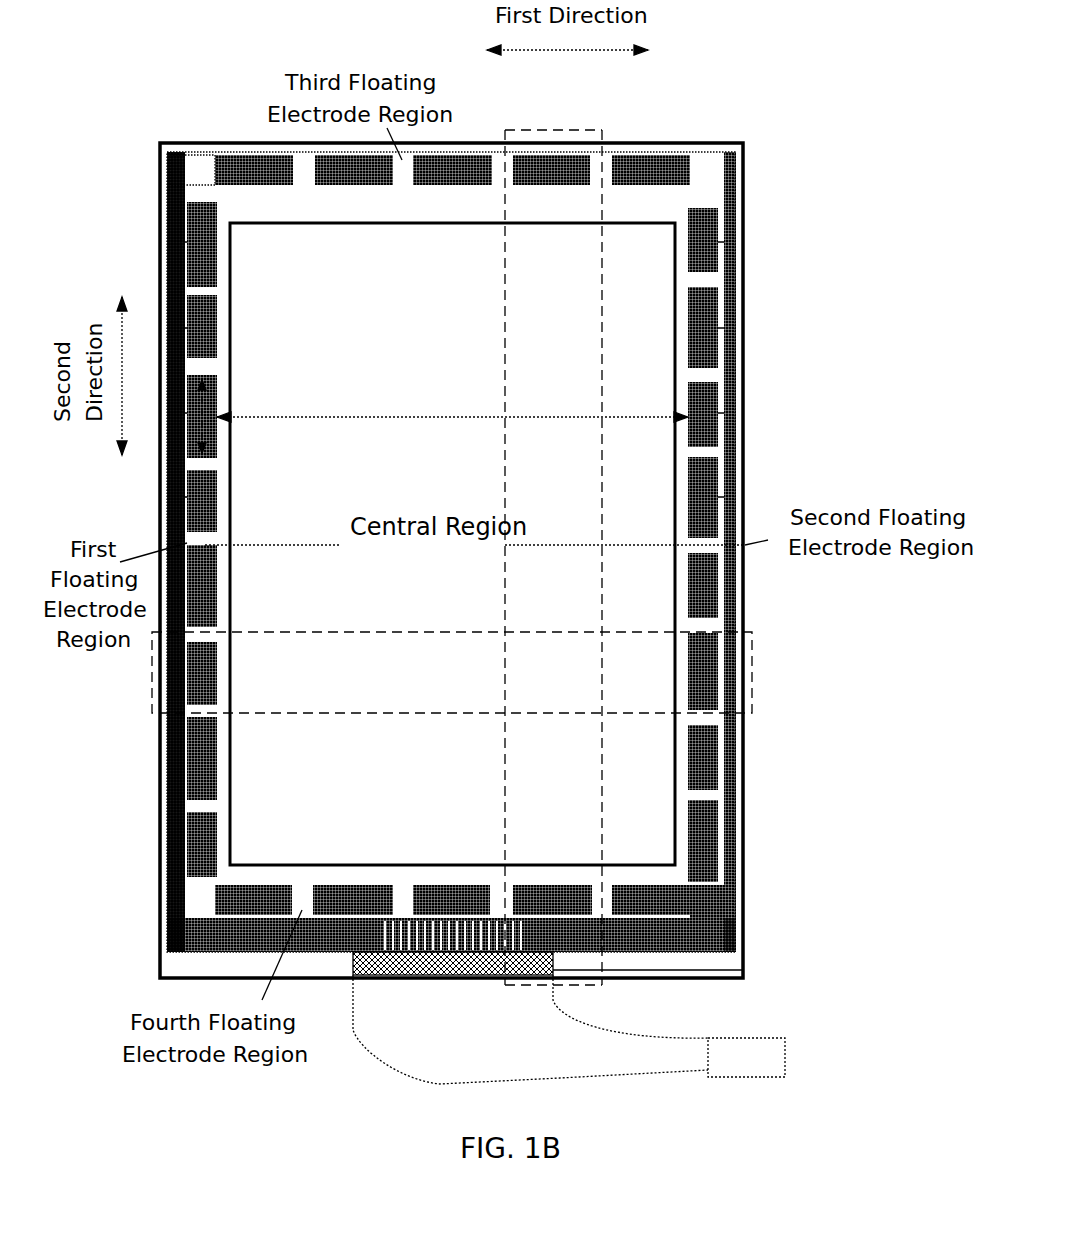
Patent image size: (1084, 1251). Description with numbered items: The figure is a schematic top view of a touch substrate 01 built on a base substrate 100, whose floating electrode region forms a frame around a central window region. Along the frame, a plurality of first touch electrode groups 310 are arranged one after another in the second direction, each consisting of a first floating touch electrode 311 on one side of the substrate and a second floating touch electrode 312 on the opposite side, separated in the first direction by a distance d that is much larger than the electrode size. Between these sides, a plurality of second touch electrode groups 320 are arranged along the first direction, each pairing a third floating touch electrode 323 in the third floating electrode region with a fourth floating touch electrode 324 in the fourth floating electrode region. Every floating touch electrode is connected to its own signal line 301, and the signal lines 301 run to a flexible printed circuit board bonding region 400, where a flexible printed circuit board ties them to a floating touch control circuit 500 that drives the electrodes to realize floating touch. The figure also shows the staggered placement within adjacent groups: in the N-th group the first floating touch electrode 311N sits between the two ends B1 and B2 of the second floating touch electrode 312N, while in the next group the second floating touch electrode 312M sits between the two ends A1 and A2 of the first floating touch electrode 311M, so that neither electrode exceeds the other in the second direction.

The touch substrate 01 is at (451, 531).
The base substrate 100 is at (663, 143).
The signal line 301 is at (715, 927).
The first touch electrode group 310 is at (752, 675).
The first floating touch electrode 311 is at (185, 658).
The first floating touch electrode 311N is at (185, 488).
The first floating touch electrode 311M is at (217, 578).
The second floating touch electrode 312 is at (715, 695).
The second floating touch electrode 312N is at (705, 482).
The second floating touch electrode 312M is at (705, 585).
The second touch electrode group 320 is at (533, 130).
The third floating touch electrode 323 is at (574, 160).
The fourth floating touch electrode 324 is at (545, 895).
The flexible printed circuit board bonding region 400 is at (535, 962).
The floating touch control circuit 500 is at (785, 1057).
The end of first floating touch electrode A1 is at (213, 538).
The end of first floating touch electrode A2 is at (220, 618).
The end of second floating touch electrode B1 is at (705, 452).
The end of second floating touch electrode B2 is at (738, 512).
The distance d is at (452, 406).